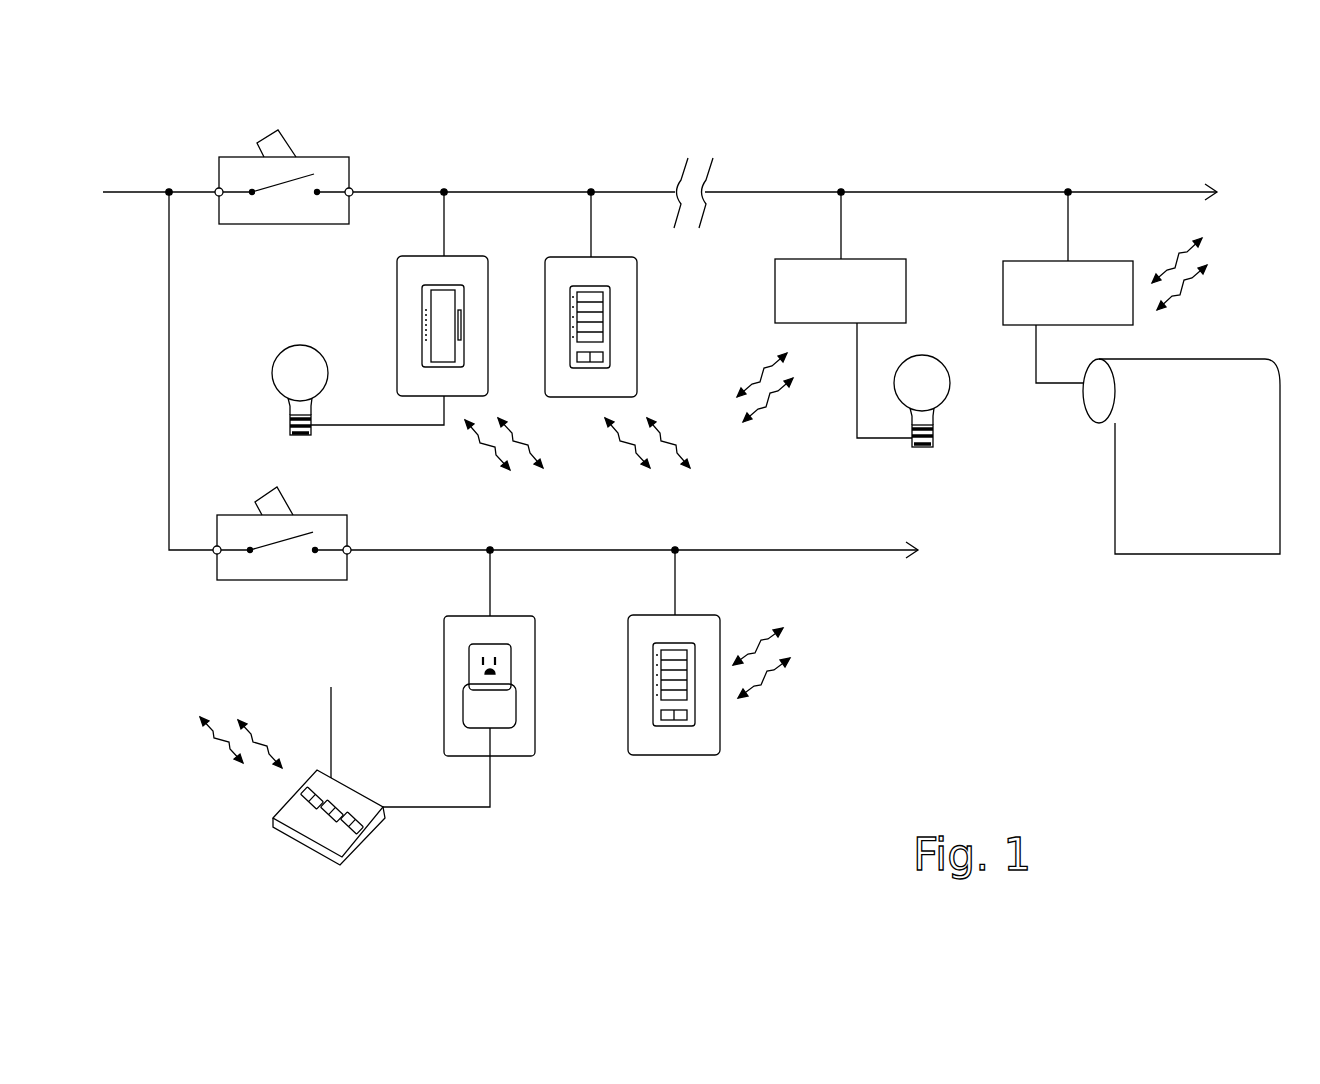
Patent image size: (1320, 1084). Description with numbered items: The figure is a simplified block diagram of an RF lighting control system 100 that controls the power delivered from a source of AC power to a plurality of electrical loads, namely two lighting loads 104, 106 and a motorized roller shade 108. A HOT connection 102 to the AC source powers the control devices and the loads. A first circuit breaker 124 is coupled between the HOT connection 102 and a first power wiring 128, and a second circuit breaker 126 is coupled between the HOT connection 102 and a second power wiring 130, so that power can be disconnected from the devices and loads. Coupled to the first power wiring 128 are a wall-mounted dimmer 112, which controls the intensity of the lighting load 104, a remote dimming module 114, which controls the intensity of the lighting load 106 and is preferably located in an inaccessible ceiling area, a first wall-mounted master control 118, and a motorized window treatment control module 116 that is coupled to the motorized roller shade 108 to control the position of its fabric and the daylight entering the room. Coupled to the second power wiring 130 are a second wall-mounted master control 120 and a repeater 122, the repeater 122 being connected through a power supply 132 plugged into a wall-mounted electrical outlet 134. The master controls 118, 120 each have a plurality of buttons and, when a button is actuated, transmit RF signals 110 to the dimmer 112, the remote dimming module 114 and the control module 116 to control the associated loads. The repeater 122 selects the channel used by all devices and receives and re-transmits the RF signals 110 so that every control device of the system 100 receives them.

The RF lighting control system 100 is at (1000, 732).
The HOT connection 102 is at (140, 194).
The lighting load 104 is at (283, 353).
The lighting load 106 is at (953, 386).
The motorized roller shade 108 is at (1158, 439).
The RF signals 110 is at (550, 489).
The wall-mounted dimmer 112 is at (397, 296).
The remote dimming module 114 is at (840, 257).
The motorized window treatment (MWT) control module 116 is at (1068, 258).
The first wall-mounted master control 118 is at (553, 257).
The second wall-mounted master control 120 is at (697, 755).
The repeater 122 is at (352, 858).
The first circuit breaker 124 is at (334, 157).
The second circuit breaker 126 is at (265, 580).
The first power wiring 128 is at (558, 190).
The second power wiring 130 is at (827, 552).
The power supply 132 is at (516, 705).
The wall-mounted electrical outlet 134 is at (444, 642).